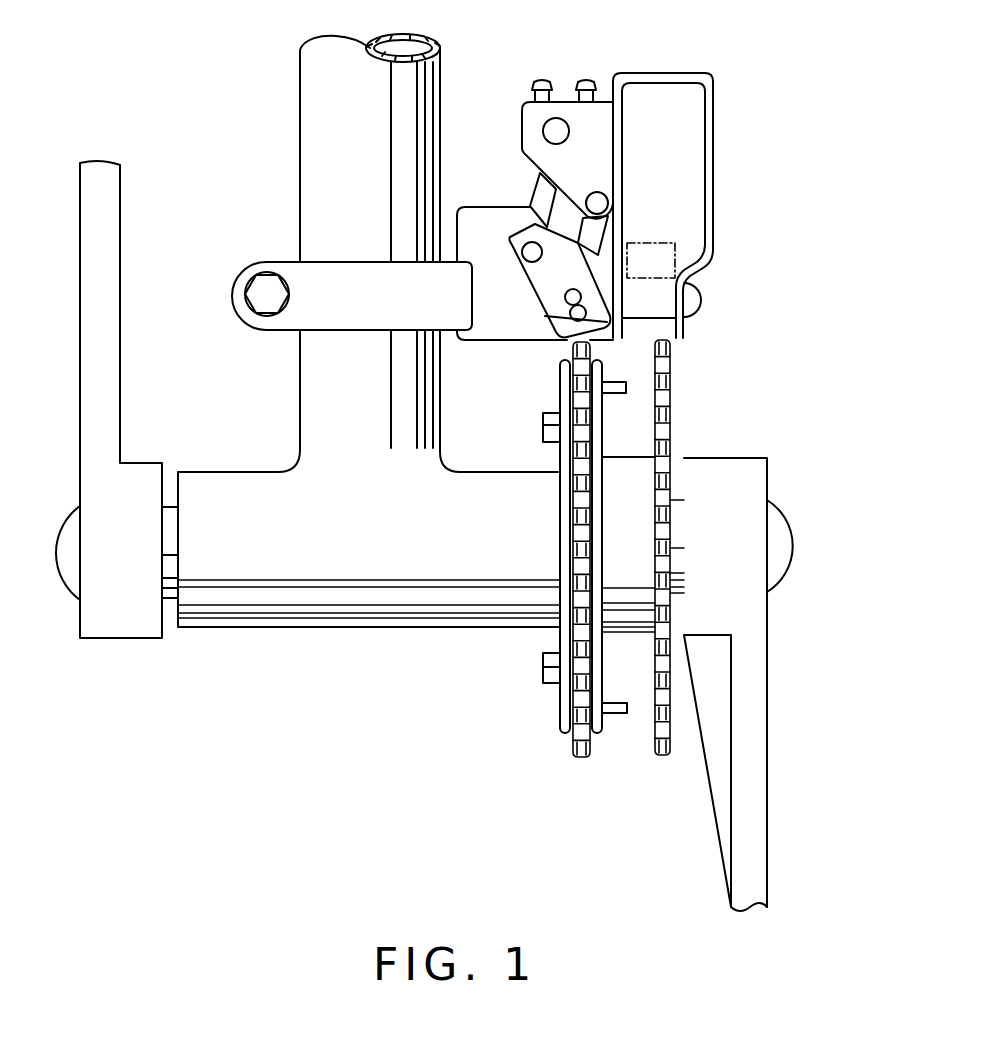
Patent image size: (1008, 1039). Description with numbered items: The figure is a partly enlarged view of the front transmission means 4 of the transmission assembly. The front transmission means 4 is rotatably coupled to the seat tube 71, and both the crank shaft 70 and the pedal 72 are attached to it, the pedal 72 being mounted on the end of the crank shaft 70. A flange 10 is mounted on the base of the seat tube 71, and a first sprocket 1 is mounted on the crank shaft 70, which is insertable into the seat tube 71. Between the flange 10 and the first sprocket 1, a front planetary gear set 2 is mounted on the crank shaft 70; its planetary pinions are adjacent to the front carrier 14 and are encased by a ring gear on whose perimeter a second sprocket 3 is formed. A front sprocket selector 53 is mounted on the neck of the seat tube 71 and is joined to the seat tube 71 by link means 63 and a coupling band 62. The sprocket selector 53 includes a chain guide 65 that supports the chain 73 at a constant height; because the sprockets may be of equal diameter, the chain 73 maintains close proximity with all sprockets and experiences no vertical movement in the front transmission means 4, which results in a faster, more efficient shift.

The first sprocket 1 is at (663, 753).
The front planetary gear set 2 is at (558, 757).
The second sprocket 3 is at (575, 753).
The front transmission means 4 is at (682, 425).
The flange 10 is at (560, 715).
The front carrier 14 is at (593, 717).
The front sprocket selector 53 is at (727, 160).
The coupling band 62 is at (297, 275).
The link means 63 is at (540, 193).
The chain guide 65 is at (713, 195).
The crank shaft 70 is at (685, 513).
The seat tube 71 is at (366, 600).
The pedal 72 is at (128, 618).
The chain 73 is at (723, 252).